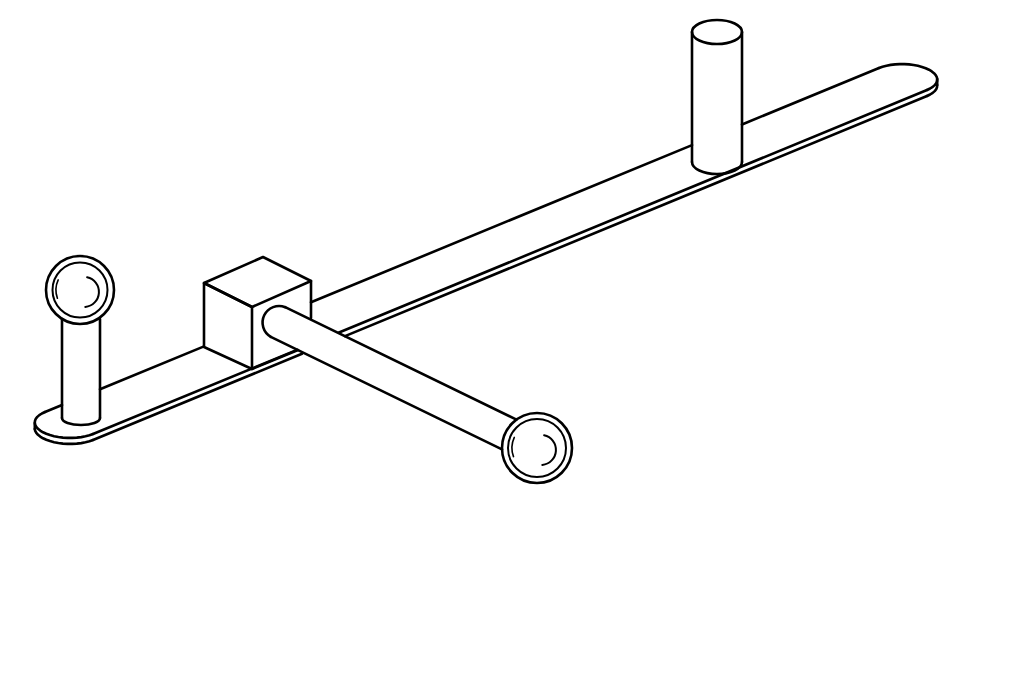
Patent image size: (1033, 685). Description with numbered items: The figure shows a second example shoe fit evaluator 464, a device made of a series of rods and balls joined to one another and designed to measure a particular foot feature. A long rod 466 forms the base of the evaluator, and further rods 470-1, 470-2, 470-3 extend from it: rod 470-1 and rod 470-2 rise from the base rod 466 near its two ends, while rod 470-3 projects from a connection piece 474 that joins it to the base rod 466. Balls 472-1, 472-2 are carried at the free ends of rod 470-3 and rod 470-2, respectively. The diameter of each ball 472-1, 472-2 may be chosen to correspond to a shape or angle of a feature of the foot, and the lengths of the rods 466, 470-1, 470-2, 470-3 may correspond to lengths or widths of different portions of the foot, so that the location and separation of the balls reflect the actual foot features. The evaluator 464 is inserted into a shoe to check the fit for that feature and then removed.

The shoe fit evaluator 464 is at (153, 139).
The rod 466 is at (634, 213).
The rod 470-1 is at (710, 78).
The rod 470-2 is at (80, 363).
The rod 470-3 is at (412, 385).
The ball 472-1 is at (540, 448).
The ball 472-2 is at (112, 278).
The connection piece 474 is at (233, 270).